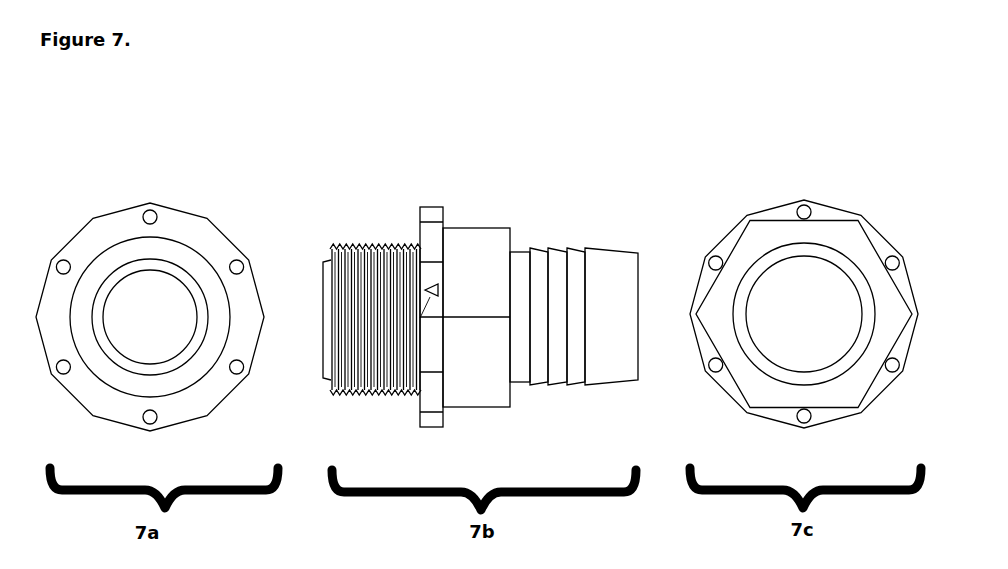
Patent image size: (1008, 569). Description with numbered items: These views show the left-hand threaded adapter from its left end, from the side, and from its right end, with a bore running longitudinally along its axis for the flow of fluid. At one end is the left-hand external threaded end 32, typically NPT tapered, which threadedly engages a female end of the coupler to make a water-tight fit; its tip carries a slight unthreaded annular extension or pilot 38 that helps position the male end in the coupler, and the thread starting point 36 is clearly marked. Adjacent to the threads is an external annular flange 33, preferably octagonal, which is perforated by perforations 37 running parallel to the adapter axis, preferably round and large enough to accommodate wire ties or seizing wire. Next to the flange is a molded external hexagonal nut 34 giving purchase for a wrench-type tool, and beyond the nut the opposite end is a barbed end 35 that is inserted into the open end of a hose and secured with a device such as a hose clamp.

In FIG. 7A, the left-hand external threaded end 32 is at (197, 251).
In FIG. 7B, the left-hand external threaded end 32 is at (377, 250).
In FIG. 7A, the external annular flange 33 is at (89, 226).
In FIG. 7B, the external annular flange 33 is at (432, 207).
In FIG. 7C, the external annular flange 33 is at (721, 244).
In FIG. 7B, the external hexagonal nut 34 is at (472, 228).
In FIG. 7C, the external hexagonal nut 34 is at (739, 232).
In FIG. 7B, the barbed end 35 is at (568, 250).
In FIG. 7C, the barbed end 35 is at (739, 288).
In FIG. 7B, the thread starting point 36 is at (383, 393).
In FIG. 7A, the perforations 37 is at (168, 211).
In FIG. 7B, the perforations 37 is at (418, 218).
In FIG. 7C, the perforations 37 is at (796, 209).
In FIG. 7A, the pilot 38 is at (135, 262).
In FIG. 7B, the pilot 38 is at (326, 262).